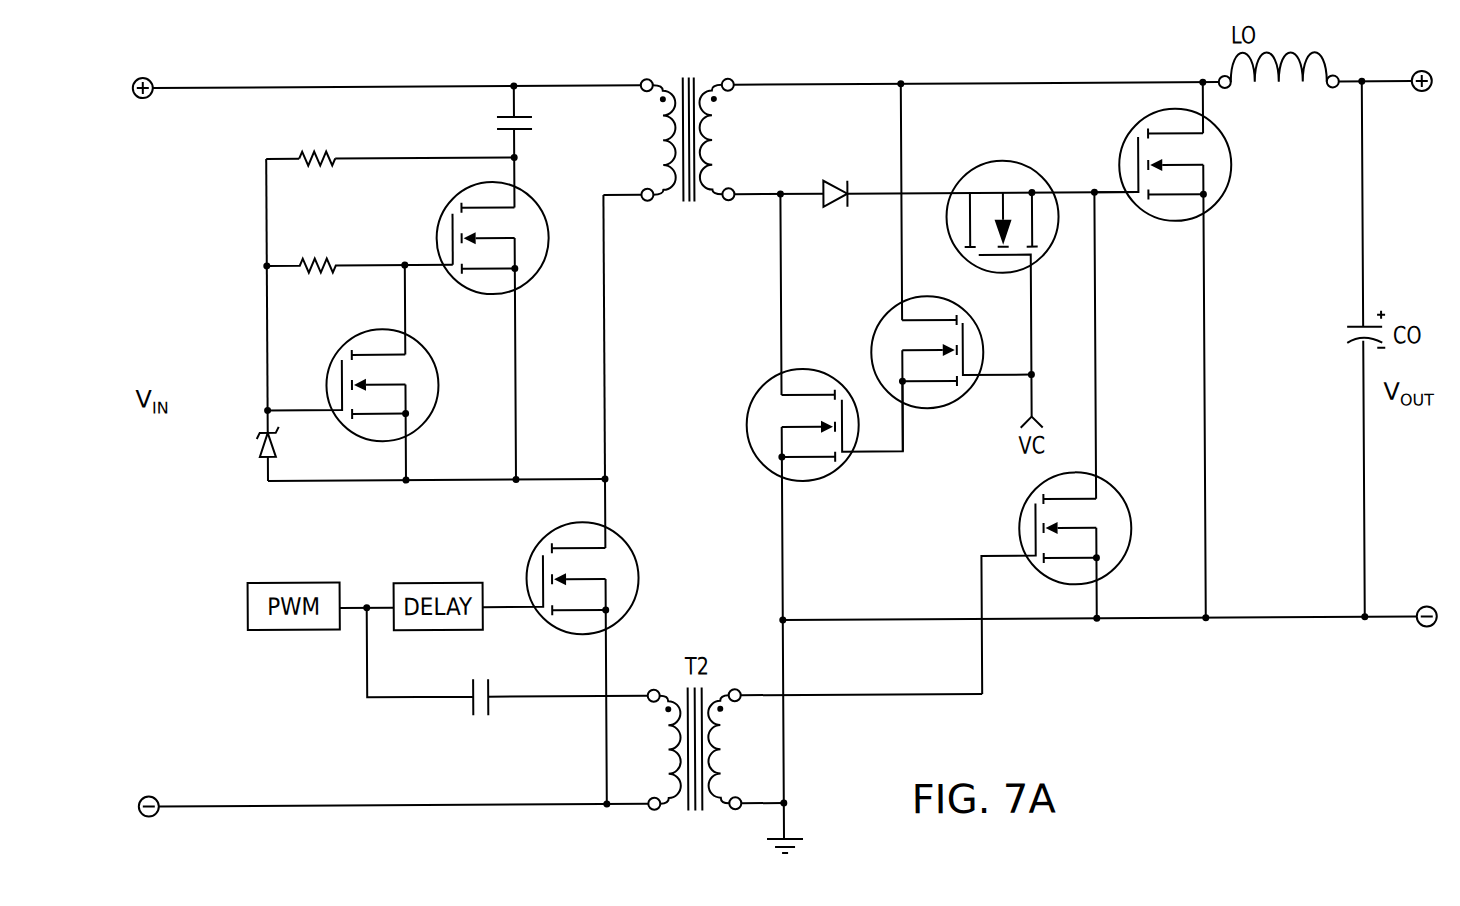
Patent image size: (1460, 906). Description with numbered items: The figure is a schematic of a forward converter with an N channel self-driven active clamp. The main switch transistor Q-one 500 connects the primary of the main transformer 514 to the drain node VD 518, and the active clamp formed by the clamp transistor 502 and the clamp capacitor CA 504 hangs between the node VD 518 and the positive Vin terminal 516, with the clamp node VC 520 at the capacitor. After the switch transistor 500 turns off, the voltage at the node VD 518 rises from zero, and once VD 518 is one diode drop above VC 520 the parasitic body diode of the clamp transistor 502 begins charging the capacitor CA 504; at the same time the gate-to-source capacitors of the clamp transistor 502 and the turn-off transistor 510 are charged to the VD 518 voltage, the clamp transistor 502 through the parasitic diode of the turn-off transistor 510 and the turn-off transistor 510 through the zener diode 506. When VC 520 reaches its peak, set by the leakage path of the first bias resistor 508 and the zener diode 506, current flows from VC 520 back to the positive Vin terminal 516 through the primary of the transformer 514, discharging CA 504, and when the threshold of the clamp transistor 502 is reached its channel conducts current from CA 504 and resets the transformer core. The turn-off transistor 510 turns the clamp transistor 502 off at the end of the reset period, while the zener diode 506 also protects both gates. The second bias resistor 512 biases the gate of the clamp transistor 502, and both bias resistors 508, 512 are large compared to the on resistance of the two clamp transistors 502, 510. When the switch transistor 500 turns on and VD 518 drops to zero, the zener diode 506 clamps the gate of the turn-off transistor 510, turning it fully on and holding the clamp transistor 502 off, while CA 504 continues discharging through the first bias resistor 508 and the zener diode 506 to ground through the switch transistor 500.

The Q1 500 is at (628, 528).
The Q2 502 is at (546, 287).
The CA 504 is at (490, 120).
The zener diode 506 is at (250, 466).
The R1 508 is at (300, 146).
The Q3 510 is at (369, 320).
The R2 512 is at (299, 253).
The T1 514 is at (648, 144).
The positive Vin terminal 516 is at (283, 83).
The node VD 518 is at (625, 474).
The VC 520 is at (533, 167).